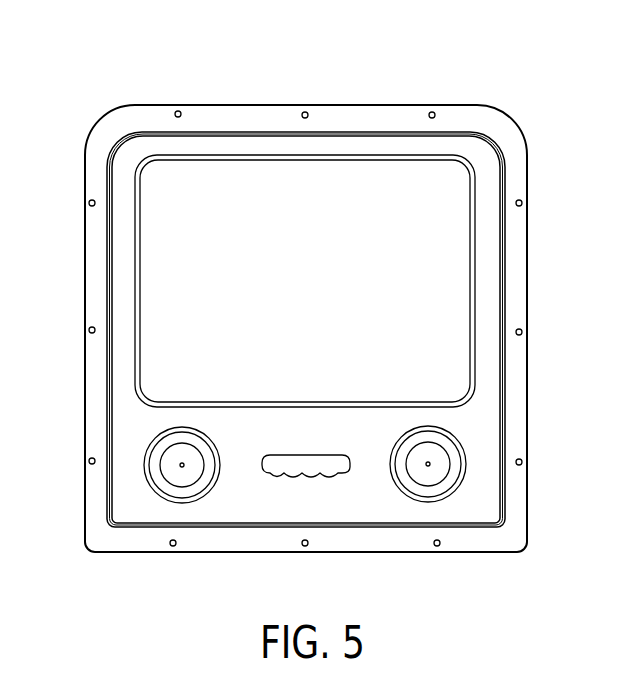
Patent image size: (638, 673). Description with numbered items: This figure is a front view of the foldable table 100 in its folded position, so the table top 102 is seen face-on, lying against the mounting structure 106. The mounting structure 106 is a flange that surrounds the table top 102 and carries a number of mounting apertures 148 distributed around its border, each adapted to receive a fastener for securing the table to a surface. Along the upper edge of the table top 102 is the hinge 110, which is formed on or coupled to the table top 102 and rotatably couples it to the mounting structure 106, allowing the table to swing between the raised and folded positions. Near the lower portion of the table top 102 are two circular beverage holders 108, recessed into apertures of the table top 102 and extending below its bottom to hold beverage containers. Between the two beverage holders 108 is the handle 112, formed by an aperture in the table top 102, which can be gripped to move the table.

The foldable table 100 is at (417, 82).
The table top 102 is at (487, 188).
The mounting structure 106 is at (362, 127).
The beverage holder 108 is at (172, 457).
The hinge 110 is at (253, 133).
The handle 112 is at (290, 477).
The mounting aperture 148 is at (89, 330).